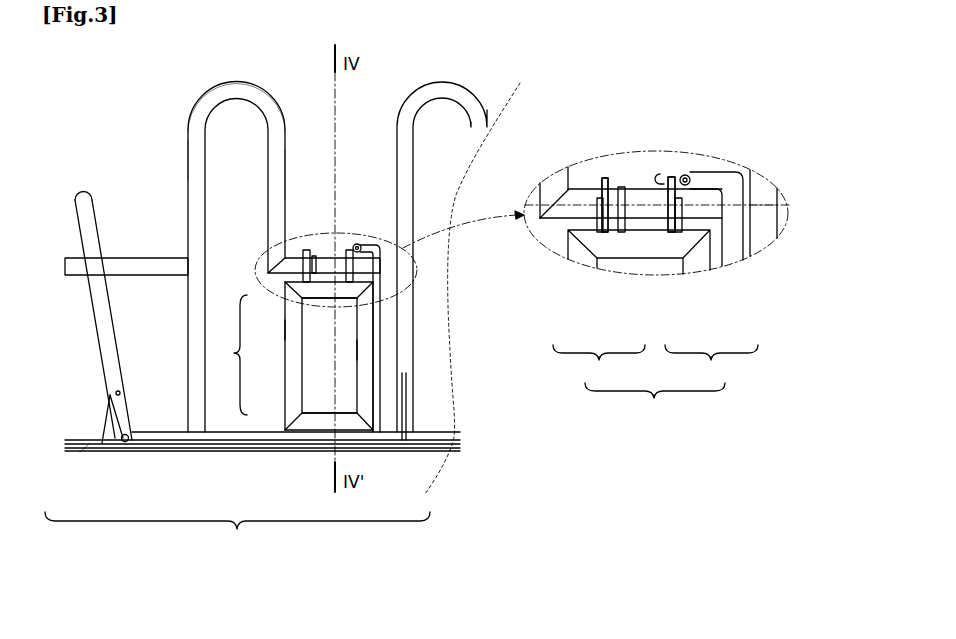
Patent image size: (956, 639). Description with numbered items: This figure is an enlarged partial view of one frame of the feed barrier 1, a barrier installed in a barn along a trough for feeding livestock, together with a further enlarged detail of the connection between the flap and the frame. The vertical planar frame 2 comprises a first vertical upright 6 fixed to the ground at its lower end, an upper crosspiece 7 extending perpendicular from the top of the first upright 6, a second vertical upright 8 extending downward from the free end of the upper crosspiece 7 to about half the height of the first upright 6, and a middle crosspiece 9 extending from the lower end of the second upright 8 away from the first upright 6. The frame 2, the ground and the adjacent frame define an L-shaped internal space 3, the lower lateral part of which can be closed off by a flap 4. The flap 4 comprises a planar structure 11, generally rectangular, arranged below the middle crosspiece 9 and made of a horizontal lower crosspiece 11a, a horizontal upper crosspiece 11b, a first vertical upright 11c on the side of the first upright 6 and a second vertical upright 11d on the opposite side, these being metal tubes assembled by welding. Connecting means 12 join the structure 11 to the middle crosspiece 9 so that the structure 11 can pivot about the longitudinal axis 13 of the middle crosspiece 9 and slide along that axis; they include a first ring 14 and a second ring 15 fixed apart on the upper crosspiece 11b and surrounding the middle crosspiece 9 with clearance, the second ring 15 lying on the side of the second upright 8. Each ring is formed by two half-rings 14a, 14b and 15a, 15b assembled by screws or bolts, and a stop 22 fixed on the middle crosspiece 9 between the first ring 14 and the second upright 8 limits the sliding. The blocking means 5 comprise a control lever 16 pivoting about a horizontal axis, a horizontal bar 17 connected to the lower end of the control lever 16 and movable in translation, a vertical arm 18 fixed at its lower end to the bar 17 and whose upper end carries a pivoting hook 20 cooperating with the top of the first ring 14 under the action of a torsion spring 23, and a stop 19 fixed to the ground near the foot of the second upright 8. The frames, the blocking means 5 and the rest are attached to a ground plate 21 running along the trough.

The feed barrier 1 is at (119, 142).
The vertical planar frame 2 is at (265, 90).
The L-shaped internal space 3 is at (218, 186).
The flap 4 is at (320, 422).
The blocking means 5 is at (252, 500).
The first vertical upright 6 is at (195, 136).
The upper crosspiece 7 is at (212, 93).
The second vertical upright 8 is at (280, 192).
The middle crosspiece 9 is at (292, 260).
The planar structure 11 is at (293, 356).
The horizontal lower crosspiece 11a is at (328, 418).
The horizontal upper crosspiece 11b is at (325, 290).
The first vertical upright 11c is at (295, 328).
The second vertical upright 11d is at (360, 348).
The connecting means 12 is at (514, 332).
The longitudinal axis 13 is at (755, 207).
The first ring 14 is at (711, 277).
The half-ring 14a is at (668, 190).
The half-ring 14b is at (681, 222).
The second ring 15 is at (599, 278).
The half-ring 15a is at (608, 200).
The half-ring 15b is at (600, 218).
The control lever 16 is at (110, 373).
The horizontal bar 17 is at (182, 440).
The vertical arm 18 is at (383, 373).
The stop 19 is at (257, 440).
The hook 20 is at (665, 180).
The plate 21 is at (72, 443).
The stop 22 is at (622, 190).
The torsion spring 23 is at (684, 176).